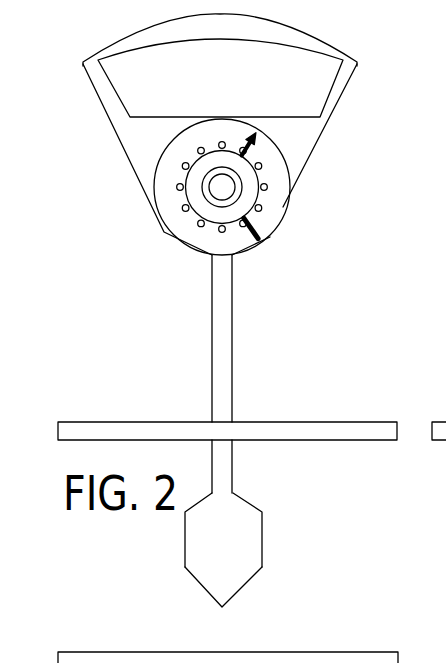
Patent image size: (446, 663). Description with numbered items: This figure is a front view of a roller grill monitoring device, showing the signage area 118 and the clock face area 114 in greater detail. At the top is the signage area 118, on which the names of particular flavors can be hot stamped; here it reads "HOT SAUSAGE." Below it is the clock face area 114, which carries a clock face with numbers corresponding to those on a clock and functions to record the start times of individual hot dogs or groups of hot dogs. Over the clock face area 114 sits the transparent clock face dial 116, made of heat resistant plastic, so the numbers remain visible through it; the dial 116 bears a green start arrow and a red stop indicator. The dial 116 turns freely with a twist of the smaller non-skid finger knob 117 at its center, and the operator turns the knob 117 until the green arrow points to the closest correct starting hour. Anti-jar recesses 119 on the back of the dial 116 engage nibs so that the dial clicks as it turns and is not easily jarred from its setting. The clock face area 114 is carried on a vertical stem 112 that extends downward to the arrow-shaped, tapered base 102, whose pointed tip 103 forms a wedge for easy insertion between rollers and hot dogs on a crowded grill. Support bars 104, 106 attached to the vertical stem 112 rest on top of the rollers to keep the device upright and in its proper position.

The base 102 is at (240, 550).
The pointed tip 103 is at (222, 606).
The support bar 104 is at (315, 660).
The support bar 106 is at (298, 432).
The vertical stem 112 is at (225, 315).
The clock face area 114 is at (293, 182).
The clock face dial 116 is at (285, 175).
The knob 117 is at (210, 187).
The signage area 118 is at (317, 67).
The anti-jar recesses 119 is at (163, 233).